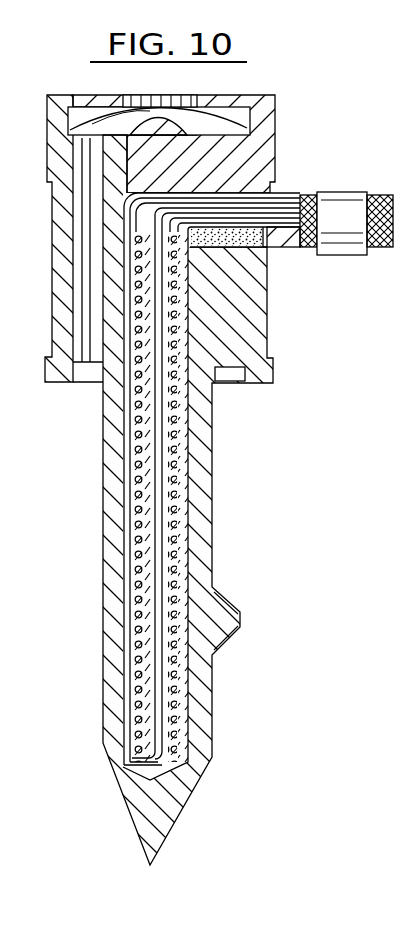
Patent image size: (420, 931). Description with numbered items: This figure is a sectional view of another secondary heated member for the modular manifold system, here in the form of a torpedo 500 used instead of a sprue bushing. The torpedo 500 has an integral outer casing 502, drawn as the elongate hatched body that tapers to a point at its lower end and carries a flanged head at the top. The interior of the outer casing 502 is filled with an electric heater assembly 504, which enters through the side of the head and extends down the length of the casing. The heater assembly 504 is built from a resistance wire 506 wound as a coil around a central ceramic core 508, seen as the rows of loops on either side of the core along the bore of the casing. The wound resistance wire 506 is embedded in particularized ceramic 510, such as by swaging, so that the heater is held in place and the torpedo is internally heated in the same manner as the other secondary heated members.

The torpedo 500 is at (280, 121).
The outer casing 502 is at (202, 468).
The electric heater assembly 504 is at (190, 403).
The resistance wire 506 is at (172, 505).
The ceramic core 508 is at (157, 543).
The particularized ceramic 510 is at (175, 655).